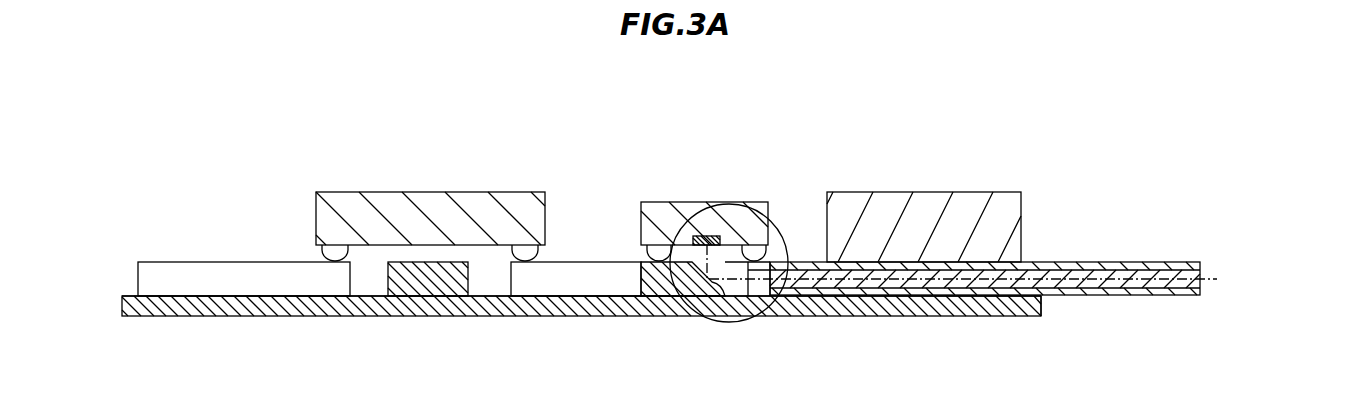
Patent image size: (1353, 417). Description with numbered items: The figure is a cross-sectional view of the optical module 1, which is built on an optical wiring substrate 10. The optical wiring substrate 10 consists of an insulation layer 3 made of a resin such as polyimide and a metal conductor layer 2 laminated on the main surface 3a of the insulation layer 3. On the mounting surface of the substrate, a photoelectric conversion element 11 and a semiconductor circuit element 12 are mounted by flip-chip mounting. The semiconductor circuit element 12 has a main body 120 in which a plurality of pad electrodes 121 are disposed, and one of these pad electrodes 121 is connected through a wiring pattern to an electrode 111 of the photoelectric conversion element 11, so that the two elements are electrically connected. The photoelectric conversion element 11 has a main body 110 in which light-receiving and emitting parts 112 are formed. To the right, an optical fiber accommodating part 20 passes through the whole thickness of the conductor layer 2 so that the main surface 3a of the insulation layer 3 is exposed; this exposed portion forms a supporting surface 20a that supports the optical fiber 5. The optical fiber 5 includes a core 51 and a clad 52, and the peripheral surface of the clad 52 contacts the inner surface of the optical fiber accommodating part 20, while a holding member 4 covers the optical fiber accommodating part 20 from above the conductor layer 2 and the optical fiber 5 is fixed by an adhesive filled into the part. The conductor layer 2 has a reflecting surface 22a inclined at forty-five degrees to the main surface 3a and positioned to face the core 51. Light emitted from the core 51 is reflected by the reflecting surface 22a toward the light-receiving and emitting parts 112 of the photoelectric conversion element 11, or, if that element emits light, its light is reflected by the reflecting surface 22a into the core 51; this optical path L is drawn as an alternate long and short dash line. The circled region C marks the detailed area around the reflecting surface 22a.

The optical module 1 is at (177, 136).
The optical wiring substrate 10 is at (116, 280).
The conductor layer 2 is at (183, 272).
The insulation layer 3 is at (437, 298).
The main surface 3a is at (248, 296).
The semiconductor circuit element 12 is at (412, 192).
The main body 120 is at (472, 197).
The pad electrodes 121 is at (328, 257).
The photoelectric conversion element 11 is at (659, 202).
The main body 110 is at (698, 208).
The electrode 111 is at (656, 246).
The light-receiving and emitting parts 112 is at (713, 237).
The holding member 4 is at (926, 196).
The optical fiber 5 is at (1266, 256).
The core 51 is at (1200, 270).
The clad 52 is at (1200, 295).
The optical fiber accommodating part 20 is at (1049, 308).
The supporting surface 20a is at (900, 296).
The reflecting surface 22a is at (718, 285).
The enlarged region C is at (735, 326).
The optical path L is at (1090, 262).